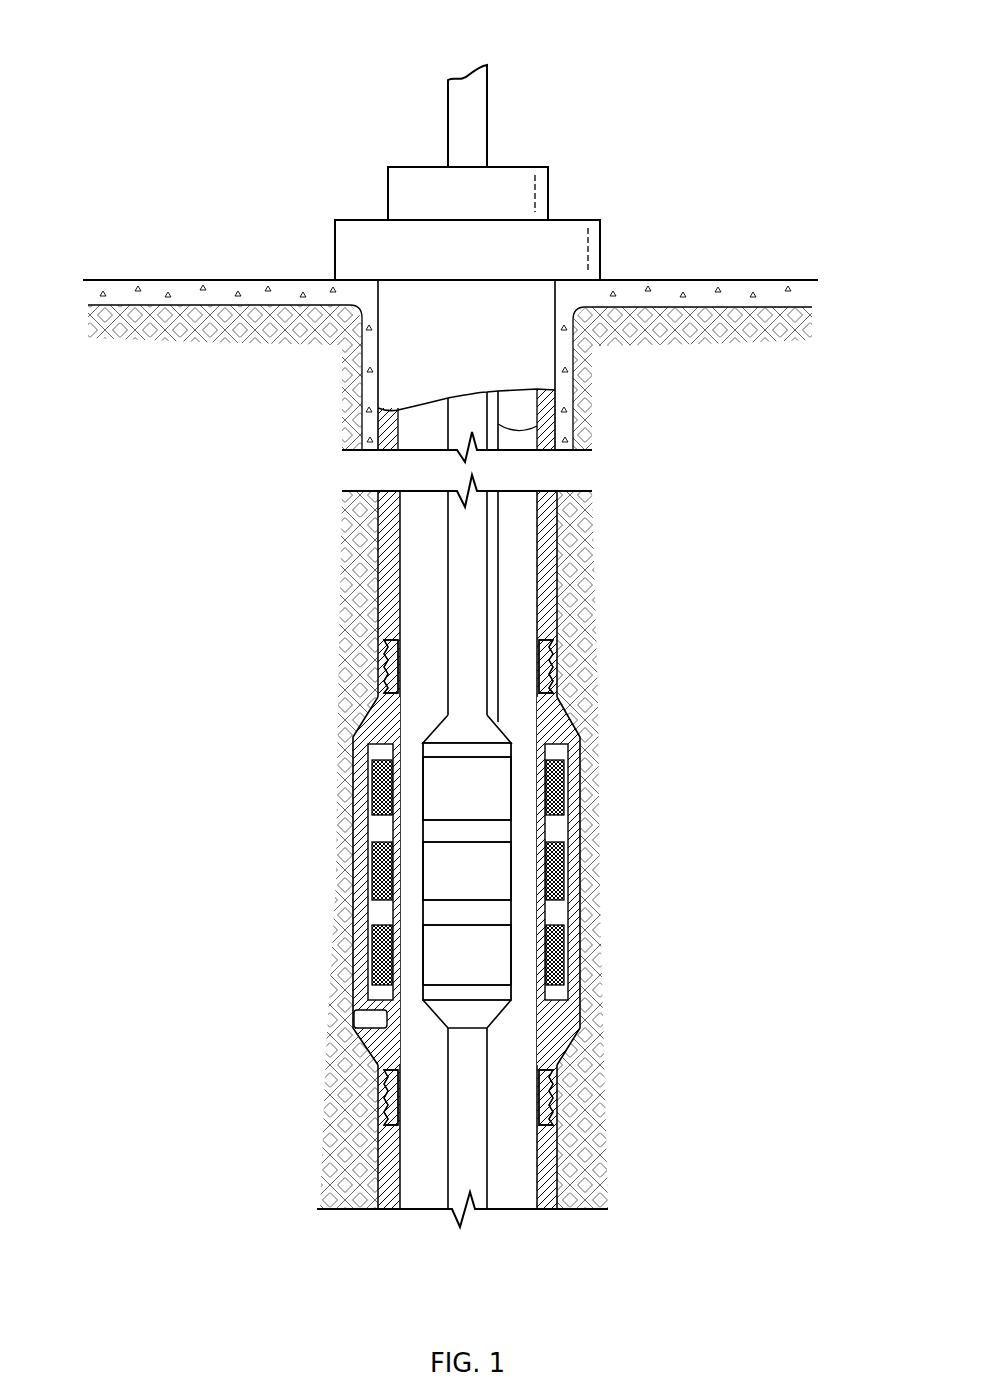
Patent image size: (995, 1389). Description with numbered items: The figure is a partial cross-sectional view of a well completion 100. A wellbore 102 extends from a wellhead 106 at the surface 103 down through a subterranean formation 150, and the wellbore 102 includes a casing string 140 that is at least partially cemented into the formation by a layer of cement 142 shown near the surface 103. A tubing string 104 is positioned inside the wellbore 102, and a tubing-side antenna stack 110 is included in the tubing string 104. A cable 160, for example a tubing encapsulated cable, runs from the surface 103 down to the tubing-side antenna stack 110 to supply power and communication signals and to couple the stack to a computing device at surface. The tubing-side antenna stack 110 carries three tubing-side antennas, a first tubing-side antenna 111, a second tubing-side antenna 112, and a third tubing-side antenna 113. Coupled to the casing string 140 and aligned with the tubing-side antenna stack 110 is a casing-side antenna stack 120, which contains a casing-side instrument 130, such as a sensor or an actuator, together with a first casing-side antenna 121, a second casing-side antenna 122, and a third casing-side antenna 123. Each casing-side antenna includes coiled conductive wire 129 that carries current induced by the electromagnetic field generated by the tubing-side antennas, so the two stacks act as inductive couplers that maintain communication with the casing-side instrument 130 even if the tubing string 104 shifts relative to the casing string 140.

The well completion 100 is at (162, 32).
The wellbore 102 is at (557, 557).
The surface 103 is at (198, 278).
The tubing string 104 is at (448, 543).
The wellhead 106 is at (602, 235).
The tubing-side antenna stack 110 is at (446, 727).
The first tubing-side antenna 111 is at (486, 800).
The second tubing-side antenna 112 is at (486, 884).
The third tubing-side antenna 113 is at (486, 967).
The casing-side antenna stack 120 is at (566, 718).
The first casing-side antenna 121 is at (552, 822).
The second casing-side antenna 122 is at (552, 905).
The third casing-side antenna 123 is at (550, 990).
The conductive wire 129 is at (374, 810).
The casing-side instrument 130 is at (356, 1020).
The casing string 140 is at (386, 622).
The cement 142 is at (692, 290).
The subterranean formation 150 is at (223, 421).
The cable 160 is at (537, 427).